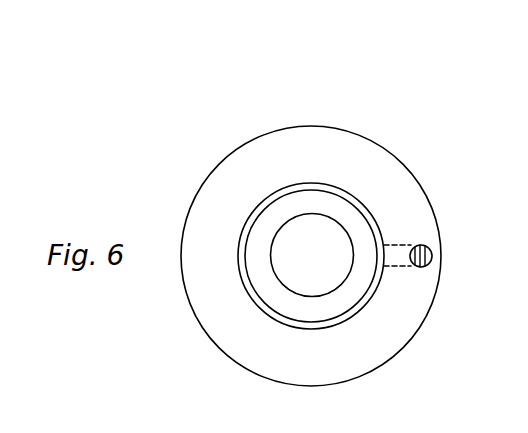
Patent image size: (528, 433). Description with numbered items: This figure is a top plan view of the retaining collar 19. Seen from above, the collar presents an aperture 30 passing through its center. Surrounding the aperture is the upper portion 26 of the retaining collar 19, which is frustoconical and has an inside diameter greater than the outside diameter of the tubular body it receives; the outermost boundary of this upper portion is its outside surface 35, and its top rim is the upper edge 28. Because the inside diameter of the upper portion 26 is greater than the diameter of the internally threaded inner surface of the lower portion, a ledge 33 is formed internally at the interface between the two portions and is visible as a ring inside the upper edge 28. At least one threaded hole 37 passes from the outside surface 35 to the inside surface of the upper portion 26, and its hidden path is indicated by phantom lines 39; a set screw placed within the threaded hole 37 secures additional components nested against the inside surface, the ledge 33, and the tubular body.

The retaining collar 19 is at (368, 122).
The upper portion 26 is at (252, 140).
The upper edge 28 is at (257, 218).
The aperture 30 is at (292, 263).
The ledge 33 is at (253, 268).
The outside surface 35 is at (393, 339).
The threaded hole 37 is at (424, 250).
The phantom lines 39 is at (393, 243).